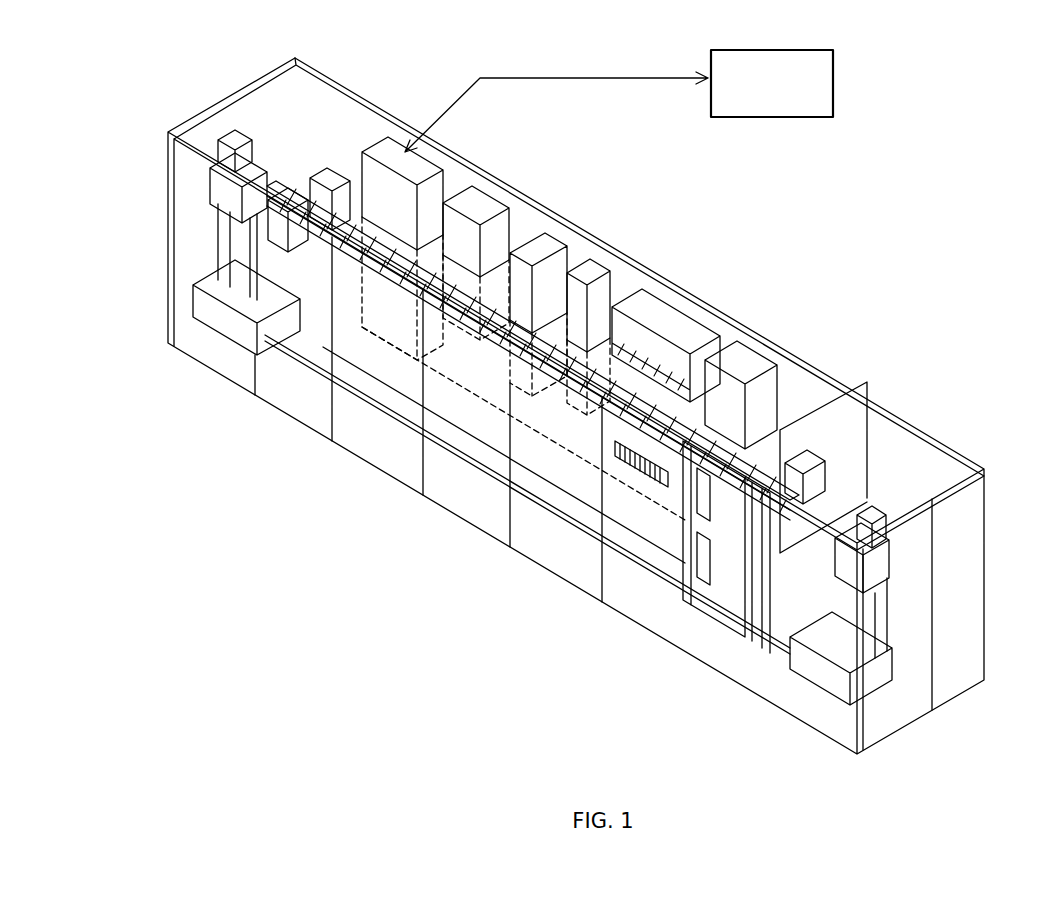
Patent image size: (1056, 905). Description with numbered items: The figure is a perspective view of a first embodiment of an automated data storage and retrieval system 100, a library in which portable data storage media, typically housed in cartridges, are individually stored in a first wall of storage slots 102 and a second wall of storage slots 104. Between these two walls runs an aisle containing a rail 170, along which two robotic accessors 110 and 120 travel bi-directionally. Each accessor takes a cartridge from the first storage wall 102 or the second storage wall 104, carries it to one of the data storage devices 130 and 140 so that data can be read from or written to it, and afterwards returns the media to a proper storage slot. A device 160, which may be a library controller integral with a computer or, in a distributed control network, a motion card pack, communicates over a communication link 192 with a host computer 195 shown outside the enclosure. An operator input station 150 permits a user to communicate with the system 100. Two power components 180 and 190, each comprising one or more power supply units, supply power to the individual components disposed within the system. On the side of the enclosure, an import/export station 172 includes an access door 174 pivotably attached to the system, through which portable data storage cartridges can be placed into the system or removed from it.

The automated data storage and retrieval system 100 is at (600, 646).
The first wall of storage slots 102 is at (397, 279).
The second wall of storage slots 104 is at (370, 365).
The accessor 110 is at (213, 186).
The accessor 120 is at (887, 563).
The data storage device 130 is at (557, 237).
The data storage device 140 is at (600, 262).
The operator input station 150 is at (498, 197).
The library controller 160 is at (397, 143).
The rail 170 is at (463, 455).
The import/export station 172 is at (728, 600).
The access door 174 is at (720, 578).
The power component 180 is at (808, 455).
The power component 190 is at (865, 512).
The communication link 192 is at (632, 82).
The host computer 195 is at (752, 95).